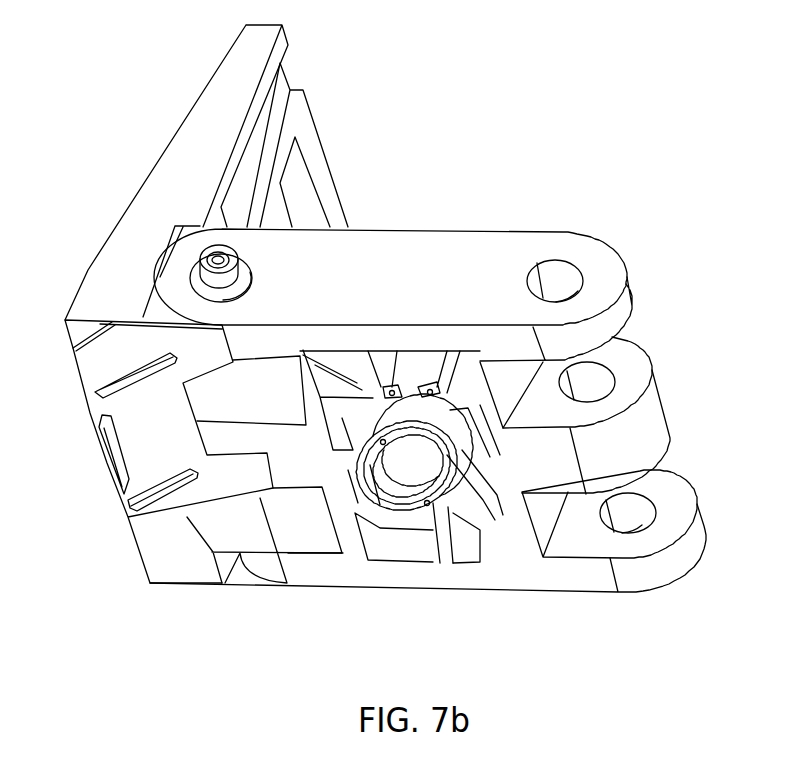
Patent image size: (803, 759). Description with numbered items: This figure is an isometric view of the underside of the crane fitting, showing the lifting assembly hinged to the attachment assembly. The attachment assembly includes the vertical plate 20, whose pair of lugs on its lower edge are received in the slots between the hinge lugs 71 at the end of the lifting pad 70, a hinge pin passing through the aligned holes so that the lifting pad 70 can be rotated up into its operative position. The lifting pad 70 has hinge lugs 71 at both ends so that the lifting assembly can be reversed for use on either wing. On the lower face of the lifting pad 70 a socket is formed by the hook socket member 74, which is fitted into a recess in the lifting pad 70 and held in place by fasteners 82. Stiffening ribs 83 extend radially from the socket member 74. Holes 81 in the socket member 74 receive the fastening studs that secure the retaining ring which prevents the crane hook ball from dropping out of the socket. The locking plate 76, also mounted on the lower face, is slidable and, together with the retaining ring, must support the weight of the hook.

The vertical plate 20 is at (114, 266).
The lifting pad 70 is at (442, 247).
The hinge lugs 71 is at (297, 398).
The hook socket member 74 is at (413, 410).
The locking plate 76 is at (187, 518).
The holes 81 is at (375, 445).
The fasteners 82 is at (366, 398).
The stiffening ribs 83 is at (343, 380).